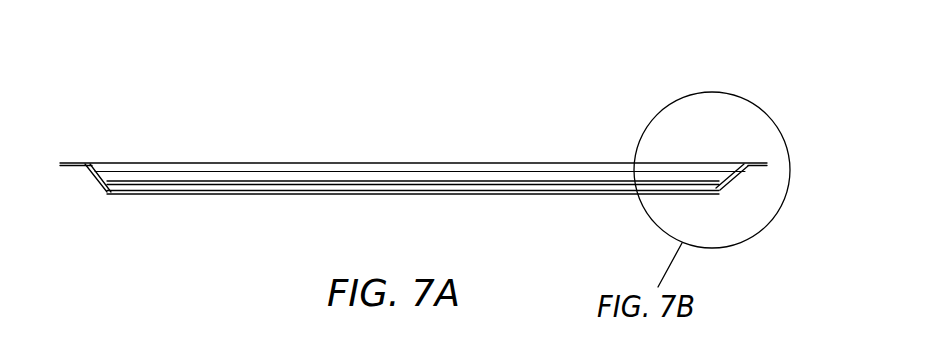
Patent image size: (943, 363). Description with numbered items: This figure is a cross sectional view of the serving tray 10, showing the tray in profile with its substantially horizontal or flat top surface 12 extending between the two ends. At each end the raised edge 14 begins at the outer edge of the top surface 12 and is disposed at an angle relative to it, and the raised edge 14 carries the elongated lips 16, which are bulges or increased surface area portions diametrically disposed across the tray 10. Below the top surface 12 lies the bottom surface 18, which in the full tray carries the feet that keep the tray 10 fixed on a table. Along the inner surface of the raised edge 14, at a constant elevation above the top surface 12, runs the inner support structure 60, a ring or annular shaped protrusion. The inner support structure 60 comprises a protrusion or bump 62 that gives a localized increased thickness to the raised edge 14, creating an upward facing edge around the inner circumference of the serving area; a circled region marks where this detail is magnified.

The serving tray 10 is at (477, 127).
The top surface 12 is at (208, 192).
The raised edge 14 is at (98, 177).
The elongated lip 16 is at (80, 162).
The bottom surface 18 is at (245, 195).
The inner support structure 60 is at (255, 182).
The protrusion or bump 62 is at (118, 164).